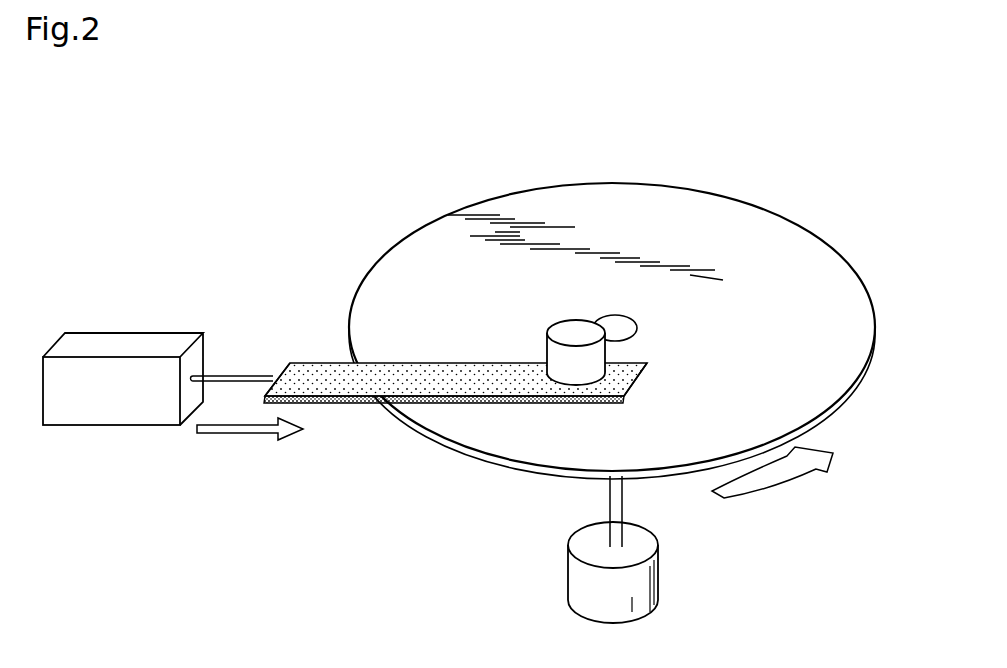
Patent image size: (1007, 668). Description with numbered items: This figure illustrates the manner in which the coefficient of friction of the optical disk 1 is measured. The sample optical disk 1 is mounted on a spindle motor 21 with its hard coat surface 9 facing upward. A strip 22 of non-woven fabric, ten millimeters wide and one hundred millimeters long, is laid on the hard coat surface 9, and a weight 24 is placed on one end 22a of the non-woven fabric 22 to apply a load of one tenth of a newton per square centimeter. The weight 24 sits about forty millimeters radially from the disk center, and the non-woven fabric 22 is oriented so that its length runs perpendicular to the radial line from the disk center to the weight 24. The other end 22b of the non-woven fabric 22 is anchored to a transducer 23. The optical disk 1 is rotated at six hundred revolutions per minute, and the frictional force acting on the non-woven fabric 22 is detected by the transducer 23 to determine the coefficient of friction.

The optical disk 1 is at (647, 177).
The hard coat surface 9 is at (780, 237).
The spindle motor 21 is at (643, 596).
The strip of non-woven fabric 22 is at (360, 387).
The one end of the non-woven fabric 22a is at (624, 368).
The other end of the non-woven fabric 22b is at (285, 360).
The transducer 23 is at (77, 418).
The weight 24 is at (553, 326).